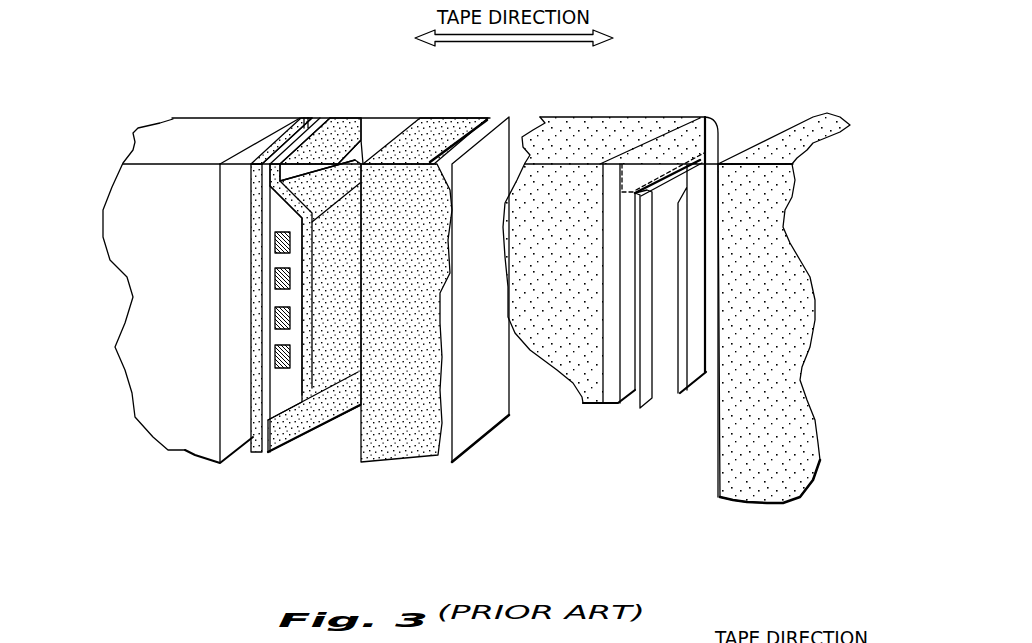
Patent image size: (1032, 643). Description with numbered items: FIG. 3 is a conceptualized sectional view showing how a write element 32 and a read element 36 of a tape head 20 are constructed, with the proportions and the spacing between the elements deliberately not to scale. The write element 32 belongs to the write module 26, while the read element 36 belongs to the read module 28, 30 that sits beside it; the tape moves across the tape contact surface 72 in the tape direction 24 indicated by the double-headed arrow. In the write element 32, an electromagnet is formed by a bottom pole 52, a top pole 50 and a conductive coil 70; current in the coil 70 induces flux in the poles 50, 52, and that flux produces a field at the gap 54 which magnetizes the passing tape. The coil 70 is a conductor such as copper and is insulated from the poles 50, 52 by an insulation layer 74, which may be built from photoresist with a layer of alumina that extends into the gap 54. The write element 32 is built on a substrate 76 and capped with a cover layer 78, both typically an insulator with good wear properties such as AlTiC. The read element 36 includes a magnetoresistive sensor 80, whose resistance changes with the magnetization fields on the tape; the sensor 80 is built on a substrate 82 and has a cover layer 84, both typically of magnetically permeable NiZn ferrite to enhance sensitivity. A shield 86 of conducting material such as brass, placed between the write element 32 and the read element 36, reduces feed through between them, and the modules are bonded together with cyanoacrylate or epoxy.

The tape head 20 is at (150, 555).
The tape direction 24 is at (540, 44).
The write module 26 is at (313, 68).
The first read module 28 is at (672, 70).
The second read module 30 is at (672, 70).
The write element 32 is at (362, 547).
The read element 36 is at (578, 547).
The top pole 50 is at (268, 452).
The bottom pole 52 is at (255, 452).
The gap 54 is at (295, 146).
The conductive coil 70 is at (285, 376).
The tape contact surface 72 is at (205, 135).
The insulation layer 74 is at (263, 381).
The substrate 76 is at (185, 450).
The cover layer 78 is at (390, 456).
The magnetoresistive sensor 80 is at (724, 100).
The substrate 82 is at (583, 408).
The cover layer 84 is at (768, 503).
The shield 86 is at (487, 433).